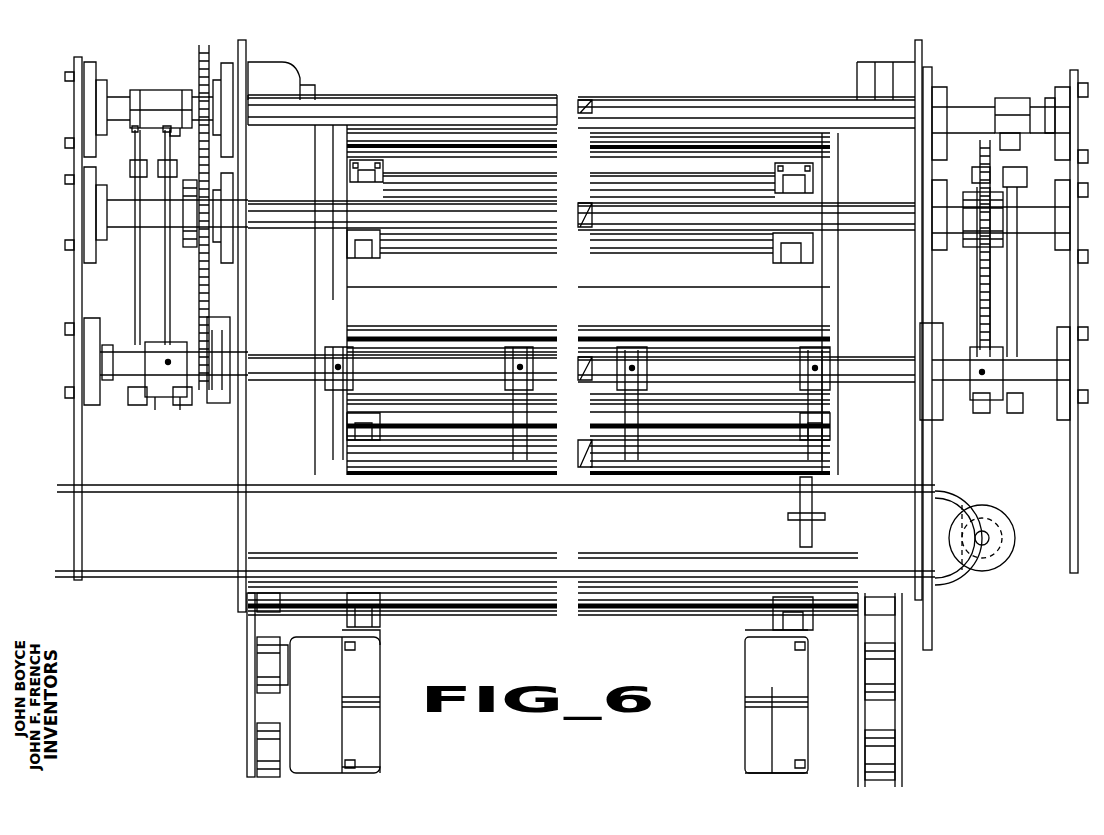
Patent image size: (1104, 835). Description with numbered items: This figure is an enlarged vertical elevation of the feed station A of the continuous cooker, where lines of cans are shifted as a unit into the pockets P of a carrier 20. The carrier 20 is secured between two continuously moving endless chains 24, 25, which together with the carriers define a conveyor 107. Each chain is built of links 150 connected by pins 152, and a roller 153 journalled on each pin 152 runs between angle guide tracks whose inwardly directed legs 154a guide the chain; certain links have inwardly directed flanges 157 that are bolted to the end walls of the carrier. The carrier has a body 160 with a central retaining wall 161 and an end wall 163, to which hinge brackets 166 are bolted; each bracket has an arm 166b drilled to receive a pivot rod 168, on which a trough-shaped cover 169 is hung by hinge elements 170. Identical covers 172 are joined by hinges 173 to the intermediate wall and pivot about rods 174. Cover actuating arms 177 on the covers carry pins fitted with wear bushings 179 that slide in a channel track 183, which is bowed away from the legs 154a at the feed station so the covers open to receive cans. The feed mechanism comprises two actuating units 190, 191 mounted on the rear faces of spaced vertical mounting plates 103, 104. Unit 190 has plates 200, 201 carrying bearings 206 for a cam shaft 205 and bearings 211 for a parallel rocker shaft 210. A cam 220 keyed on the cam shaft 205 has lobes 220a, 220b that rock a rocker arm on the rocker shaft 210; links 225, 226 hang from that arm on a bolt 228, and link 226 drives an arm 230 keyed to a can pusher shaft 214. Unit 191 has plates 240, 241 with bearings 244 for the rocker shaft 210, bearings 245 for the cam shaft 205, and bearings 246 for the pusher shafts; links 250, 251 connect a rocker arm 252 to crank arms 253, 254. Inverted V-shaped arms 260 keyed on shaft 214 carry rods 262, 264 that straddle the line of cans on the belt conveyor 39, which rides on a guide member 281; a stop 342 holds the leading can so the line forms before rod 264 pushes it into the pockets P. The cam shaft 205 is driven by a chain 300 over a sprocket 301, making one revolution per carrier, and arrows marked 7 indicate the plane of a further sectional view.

The carrier 20 is at (625, 95).
The endless chain 24 is at (240, 682).
The endless chain 25 is at (910, 688).
The endless belt conveyor 39 is at (103, 575).
The mounting plate 103 is at (918, 42).
The mounting plate 104 is at (245, 42).
The conveyor 107 is at (233, 622).
The link 150 is at (242, 637).
The pin 152 is at (242, 660).
The roller 153 is at (280, 740).
The inwardly directed leg 154a is at (253, 480).
The inwardly directed flange 157 is at (333, 638).
The body 160 is at (625, 312).
The central retaining wall 161 is at (507, 321).
The end wall 163 is at (375, 770).
The hinge bracket 166 is at (793, 280).
The arm 166b is at (363, 263).
The pivot rod 168 is at (453, 233).
The cover 169 is at (612, 240).
The hinge element 170 is at (777, 253).
The cover 172 is at (612, 155).
The hinge 173 is at (382, 342).
The rod 174 is at (600, 182).
The cover actuating arm 177 is at (333, 308).
The wear bushing 179 is at (313, 90).
The channel track 183 is at (293, 77).
The actuating unit 190 is at (1013, 95).
The actuating unit 191 is at (125, 92).
The plate 200 is at (930, 68).
The plate 201 is at (1083, 65).
The cam shaft 205 is at (113, 210).
The bearing 206 is at (1060, 233).
The rocker shaft 210 is at (115, 108).
The bearing 211 is at (968, 130).
The can pusher shaft 214 is at (115, 377).
The cam 220 is at (990, 263).
The lobe 220a is at (987, 143).
The lobe 220b is at (987, 287).
The link 225 is at (987, 318).
The link 226 is at (1013, 308).
The bolt 228 is at (983, 142).
The arm 230 is at (997, 420).
The plate 240 is at (237, 63).
The plate 241 is at (83, 90).
The bearing 244 is at (97, 117).
The bearing 245 is at (97, 220).
The bearing 246 is at (103, 340).
The link 250 is at (138, 255).
The link 251 is at (173, 282).
The rocker arm 252 is at (150, 93).
The crank arm 253 is at (153, 410).
The crank arm 254 is at (175, 410).
The inverted V-shaped arm 260 is at (330, 453).
The rod 262 is at (440, 447).
The rod 264 is at (373, 463).
The guide member 281 is at (245, 525).
The chain 300 is at (200, 45).
The sprocket 301 is at (182, 233).
The stop 342 is at (807, 507).
The feed station A is at (112, 460).
The pocket P is at (445, 153).
The section line 7- 7 is at (943, 327).